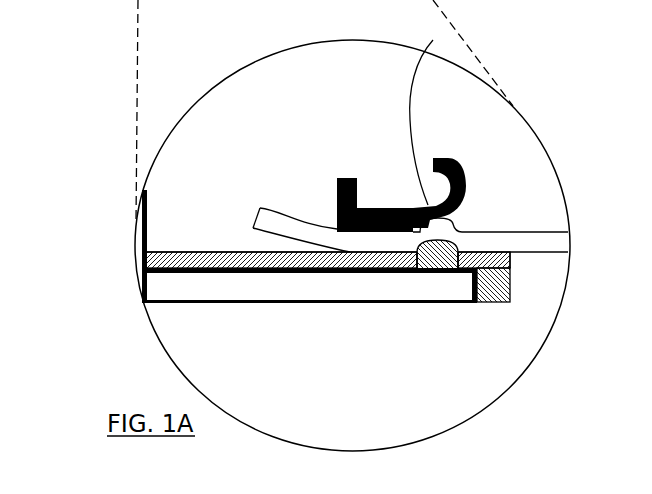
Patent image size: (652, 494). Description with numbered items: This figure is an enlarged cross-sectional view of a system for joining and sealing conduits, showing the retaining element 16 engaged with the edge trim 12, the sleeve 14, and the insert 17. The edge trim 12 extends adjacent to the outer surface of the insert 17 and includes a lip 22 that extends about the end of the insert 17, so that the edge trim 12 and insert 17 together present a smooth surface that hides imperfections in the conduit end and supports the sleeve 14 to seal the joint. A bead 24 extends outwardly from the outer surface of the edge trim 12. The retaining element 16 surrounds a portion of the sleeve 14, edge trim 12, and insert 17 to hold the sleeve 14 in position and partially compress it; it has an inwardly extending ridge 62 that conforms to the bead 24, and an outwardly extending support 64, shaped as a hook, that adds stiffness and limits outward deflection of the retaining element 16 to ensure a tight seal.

The edge trim 12 is at (163, 253).
The sleeve 14 is at (543, 227).
The retaining element 16 is at (383, 208).
The insert 17 is at (180, 303).
The lip 22 is at (510, 290).
The bead 24 is at (458, 272).
The ridge 62 is at (428, 112).
The support 64 is at (459, 172).